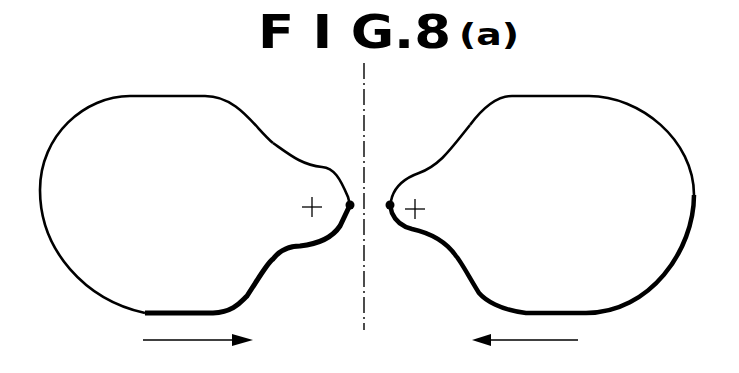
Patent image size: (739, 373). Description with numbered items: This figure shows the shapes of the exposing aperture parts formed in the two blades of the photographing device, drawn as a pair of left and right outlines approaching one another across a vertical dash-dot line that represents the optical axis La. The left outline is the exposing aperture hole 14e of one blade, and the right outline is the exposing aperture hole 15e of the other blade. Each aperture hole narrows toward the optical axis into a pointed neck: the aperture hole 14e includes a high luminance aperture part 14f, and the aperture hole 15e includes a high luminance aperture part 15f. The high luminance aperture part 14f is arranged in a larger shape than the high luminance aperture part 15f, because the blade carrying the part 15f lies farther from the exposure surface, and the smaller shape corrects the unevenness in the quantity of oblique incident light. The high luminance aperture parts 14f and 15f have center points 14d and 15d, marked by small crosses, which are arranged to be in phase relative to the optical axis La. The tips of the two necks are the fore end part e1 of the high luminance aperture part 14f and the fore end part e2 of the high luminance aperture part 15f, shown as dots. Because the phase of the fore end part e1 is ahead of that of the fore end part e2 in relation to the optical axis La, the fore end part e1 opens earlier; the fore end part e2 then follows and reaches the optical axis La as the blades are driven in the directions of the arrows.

The exposing aperture hole 14e is at (118, 97).
The high luminance aperture part 14f is at (342, 171).
The center point 14d is at (307, 206).
The exposing aperture hole 15e is at (629, 101).
The high luminance aperture part 15f is at (397, 215).
The center point 15d is at (420, 206).
The fore end part e1 is at (352, 209).
The fore end part e2 is at (389, 202).
The optical axis La is at (366, 80).